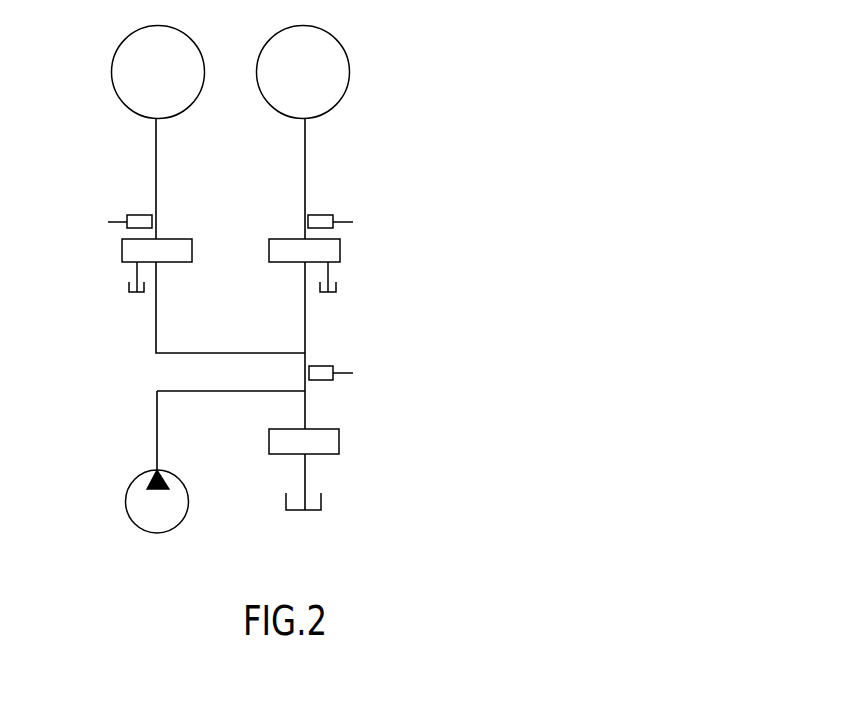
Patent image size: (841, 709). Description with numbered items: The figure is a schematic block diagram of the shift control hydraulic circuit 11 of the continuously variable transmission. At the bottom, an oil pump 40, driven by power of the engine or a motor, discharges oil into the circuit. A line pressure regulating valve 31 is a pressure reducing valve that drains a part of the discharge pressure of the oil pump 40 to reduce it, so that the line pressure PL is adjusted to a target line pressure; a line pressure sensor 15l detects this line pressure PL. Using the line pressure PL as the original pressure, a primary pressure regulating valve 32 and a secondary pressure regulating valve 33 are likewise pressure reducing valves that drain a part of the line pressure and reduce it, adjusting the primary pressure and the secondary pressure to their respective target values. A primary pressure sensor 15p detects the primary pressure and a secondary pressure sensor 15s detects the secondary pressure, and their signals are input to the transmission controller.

The shift control hydraulic circuit 11 is at (440, 491).
The primary pressure sensor 15p is at (140, 222).
The secondary pressure sensor 15s is at (320, 222).
The line pressure sensor 15l is at (320, 372).
The line pressure regulating valve 31 is at (325, 443).
The primary pressure regulating valve 32 is at (143, 255).
The secondary pressure regulating valve 33 is at (327, 248).
The oil pump 40 is at (138, 507).